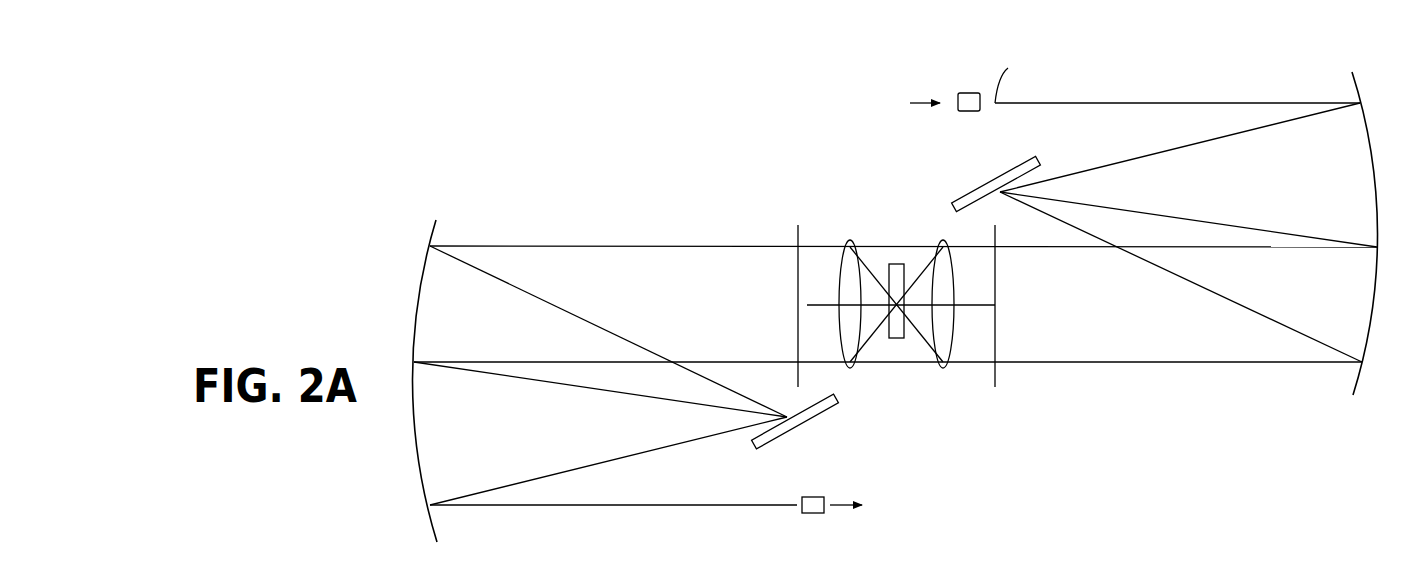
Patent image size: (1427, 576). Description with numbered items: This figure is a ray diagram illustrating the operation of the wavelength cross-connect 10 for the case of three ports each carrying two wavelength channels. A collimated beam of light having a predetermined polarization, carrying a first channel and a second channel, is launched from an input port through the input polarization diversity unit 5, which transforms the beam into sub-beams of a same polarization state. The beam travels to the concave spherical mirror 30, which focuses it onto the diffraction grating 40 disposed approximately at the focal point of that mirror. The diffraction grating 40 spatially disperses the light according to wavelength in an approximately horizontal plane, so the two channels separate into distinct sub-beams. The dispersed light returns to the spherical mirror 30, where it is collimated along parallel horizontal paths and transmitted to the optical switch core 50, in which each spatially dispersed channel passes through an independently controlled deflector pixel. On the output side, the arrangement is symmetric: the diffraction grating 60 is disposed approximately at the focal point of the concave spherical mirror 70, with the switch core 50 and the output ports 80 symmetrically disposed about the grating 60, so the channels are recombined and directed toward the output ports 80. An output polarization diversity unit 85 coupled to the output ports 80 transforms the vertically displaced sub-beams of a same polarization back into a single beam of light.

The wavelength cross-connect 10 is at (626, 124).
The input polarization diversity unit 5 is at (970, 111).
The spherical mirror 30 is at (1360, 92).
The diffraction grating 40 is at (962, 197).
The optical switch core 50 is at (982, 383).
The diffraction grating 60 is at (786, 436).
The spherical mirror 70 is at (432, 523).
The output ports 80 is at (797, 505).
The output polarization diversity unit 85 is at (808, 497).